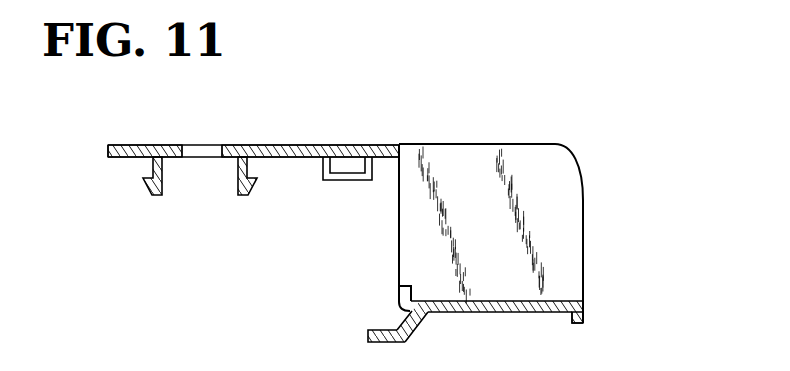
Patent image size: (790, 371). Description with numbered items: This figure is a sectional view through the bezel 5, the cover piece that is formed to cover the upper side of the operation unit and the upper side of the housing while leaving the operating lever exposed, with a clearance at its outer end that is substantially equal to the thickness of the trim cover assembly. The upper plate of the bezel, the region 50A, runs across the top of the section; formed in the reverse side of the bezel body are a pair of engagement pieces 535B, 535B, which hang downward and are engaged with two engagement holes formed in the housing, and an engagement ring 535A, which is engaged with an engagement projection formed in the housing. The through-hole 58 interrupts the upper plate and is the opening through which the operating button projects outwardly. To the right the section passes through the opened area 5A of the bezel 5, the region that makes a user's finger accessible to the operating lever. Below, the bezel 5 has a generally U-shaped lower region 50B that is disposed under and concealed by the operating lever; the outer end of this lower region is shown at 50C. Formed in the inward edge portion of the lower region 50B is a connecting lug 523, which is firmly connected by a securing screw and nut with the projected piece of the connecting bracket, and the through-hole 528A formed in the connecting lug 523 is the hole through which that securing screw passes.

The bezel 5 is at (524, 119).
The opened area 5A is at (561, 211).
The upper frame portion 50A is at (280, 145).
The lower region 50B is at (528, 313).
The engaging portion of frame 50C is at (590, 317).
The through-hole 58 is at (207, 145).
The engagement ring 535A is at (346, 183).
The engagement piece 535B is at (150, 197).
The connecting lug 523 is at (418, 324).
The through-hole 528A is at (393, 331).